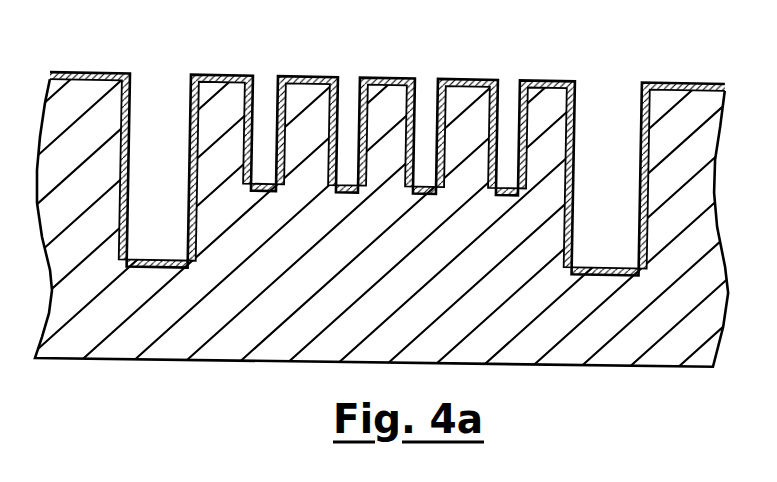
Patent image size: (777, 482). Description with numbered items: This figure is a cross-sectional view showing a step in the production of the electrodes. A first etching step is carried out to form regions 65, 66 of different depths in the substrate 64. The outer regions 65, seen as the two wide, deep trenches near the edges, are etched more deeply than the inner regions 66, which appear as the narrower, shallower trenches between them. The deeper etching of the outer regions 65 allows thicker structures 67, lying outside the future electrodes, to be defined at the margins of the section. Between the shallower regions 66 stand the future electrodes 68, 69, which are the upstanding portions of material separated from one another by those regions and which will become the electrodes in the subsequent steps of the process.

The substrate 64 is at (675, 110).
The outer region 65 is at (163, 97).
The region 66 is at (263, 88).
The thicker structure 67 is at (84, 97).
The future electrode 68 is at (227, 100).
The future electrode 69 is at (304, 87).